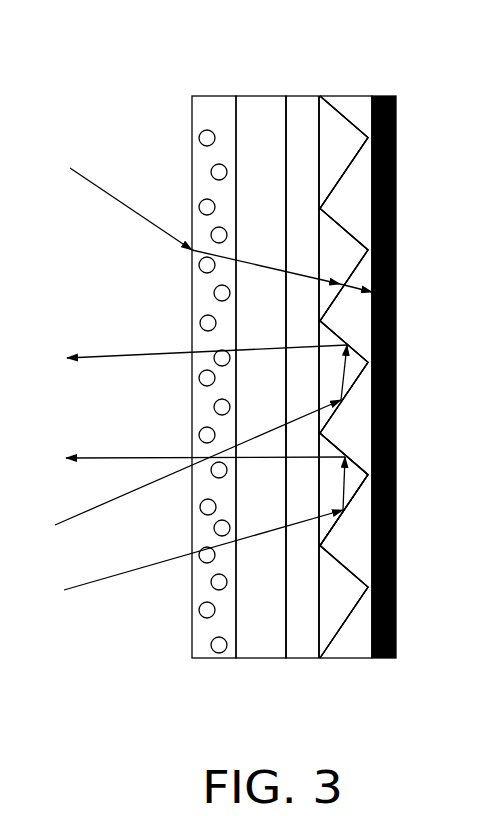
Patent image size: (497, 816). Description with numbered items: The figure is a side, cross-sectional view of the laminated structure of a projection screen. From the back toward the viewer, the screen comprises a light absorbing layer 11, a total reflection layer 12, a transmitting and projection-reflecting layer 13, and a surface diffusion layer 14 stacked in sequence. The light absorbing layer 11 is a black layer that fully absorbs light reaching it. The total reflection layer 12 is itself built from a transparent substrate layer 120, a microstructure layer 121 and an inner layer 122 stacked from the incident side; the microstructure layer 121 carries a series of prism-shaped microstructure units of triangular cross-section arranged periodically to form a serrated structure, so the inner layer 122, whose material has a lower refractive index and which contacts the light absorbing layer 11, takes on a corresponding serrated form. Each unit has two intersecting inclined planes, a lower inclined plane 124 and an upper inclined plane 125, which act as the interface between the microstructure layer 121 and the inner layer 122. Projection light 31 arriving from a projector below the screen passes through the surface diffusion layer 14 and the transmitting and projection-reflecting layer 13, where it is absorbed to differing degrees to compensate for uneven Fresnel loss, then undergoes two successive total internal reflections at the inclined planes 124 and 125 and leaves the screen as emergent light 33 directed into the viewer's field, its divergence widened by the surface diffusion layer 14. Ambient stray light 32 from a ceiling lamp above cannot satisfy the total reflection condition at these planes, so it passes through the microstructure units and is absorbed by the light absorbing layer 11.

The light absorbing layer 11 is at (393, 85).
The total reflection layer 12 is at (328, 85).
The transmitting and projection-reflecting layer 13 is at (260, 85).
The surface diffusion layer 14 is at (204, 85).
The transparent substrate layer 120 is at (300, 630).
The microstructure layer 121 is at (335, 612).
The inner layer 122 is at (357, 642).
The inclined plane 124 is at (351, 505).
The inclined plane 125 is at (339, 447).
The projection light 31 is at (186, 467).
The ambient stray light 32 is at (221, 228).
The emergent light 33 is at (206, 396).